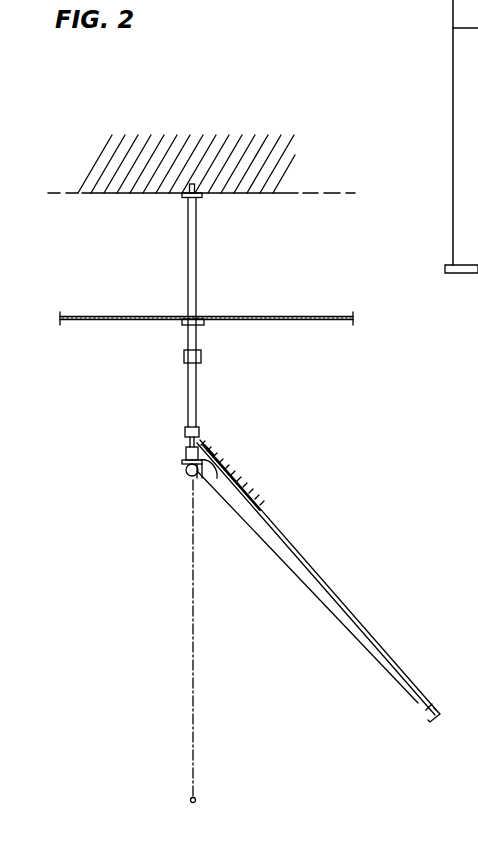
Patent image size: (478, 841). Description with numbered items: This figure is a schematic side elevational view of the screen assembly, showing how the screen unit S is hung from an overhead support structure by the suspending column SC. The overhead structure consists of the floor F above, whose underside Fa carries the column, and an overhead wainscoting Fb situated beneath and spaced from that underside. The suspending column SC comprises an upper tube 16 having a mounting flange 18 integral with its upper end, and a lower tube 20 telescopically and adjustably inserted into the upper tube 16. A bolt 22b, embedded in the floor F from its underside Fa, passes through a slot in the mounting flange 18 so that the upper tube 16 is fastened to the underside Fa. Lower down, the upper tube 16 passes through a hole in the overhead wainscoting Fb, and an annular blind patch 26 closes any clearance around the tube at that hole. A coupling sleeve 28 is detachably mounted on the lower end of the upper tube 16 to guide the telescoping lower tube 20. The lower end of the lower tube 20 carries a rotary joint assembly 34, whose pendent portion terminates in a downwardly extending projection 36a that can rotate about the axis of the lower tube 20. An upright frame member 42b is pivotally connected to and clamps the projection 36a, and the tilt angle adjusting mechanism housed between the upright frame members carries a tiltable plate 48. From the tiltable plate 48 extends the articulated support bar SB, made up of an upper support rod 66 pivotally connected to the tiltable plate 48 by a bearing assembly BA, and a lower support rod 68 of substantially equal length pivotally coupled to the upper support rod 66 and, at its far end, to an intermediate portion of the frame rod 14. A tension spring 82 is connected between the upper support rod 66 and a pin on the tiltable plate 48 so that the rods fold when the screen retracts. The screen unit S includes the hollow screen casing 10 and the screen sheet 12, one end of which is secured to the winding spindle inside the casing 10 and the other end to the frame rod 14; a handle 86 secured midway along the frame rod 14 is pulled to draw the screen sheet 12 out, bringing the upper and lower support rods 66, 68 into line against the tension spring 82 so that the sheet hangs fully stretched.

The screen casing 10 is at (186, 474).
The screen sheet 12 is at (190, 560).
The frame rod 14 is at (417, 708).
The upper tube 16 is at (195, 294).
The mounting flange 18 is at (197, 205).
The lower tube 20 is at (197, 386).
The bolt 22b is at (191, 184).
The annular blind patch 26 is at (201, 322).
The coupling sleeve 28 is at (184, 357).
The rotary joint assembly 34 is at (200, 432).
The projection 36a is at (190, 446).
The upright frame member 42b is at (184, 458).
The tiltable plate 48 is at (240, 476).
The upper support rod 66 is at (290, 537).
The lower support rod 68 is at (350, 608).
The tension spring 82 is at (257, 488).
The handle 86 is at (428, 720).
The floor F is at (305, 168).
The underside of the floor Fa is at (136, 194).
The overhead wainscoting Fb is at (330, 316).
The screen unit S is at (295, 587).
The articulated support bar SB is at (325, 582).
The suspending column SC is at (184, 275).
The bearing assembly BA is at (215, 450).